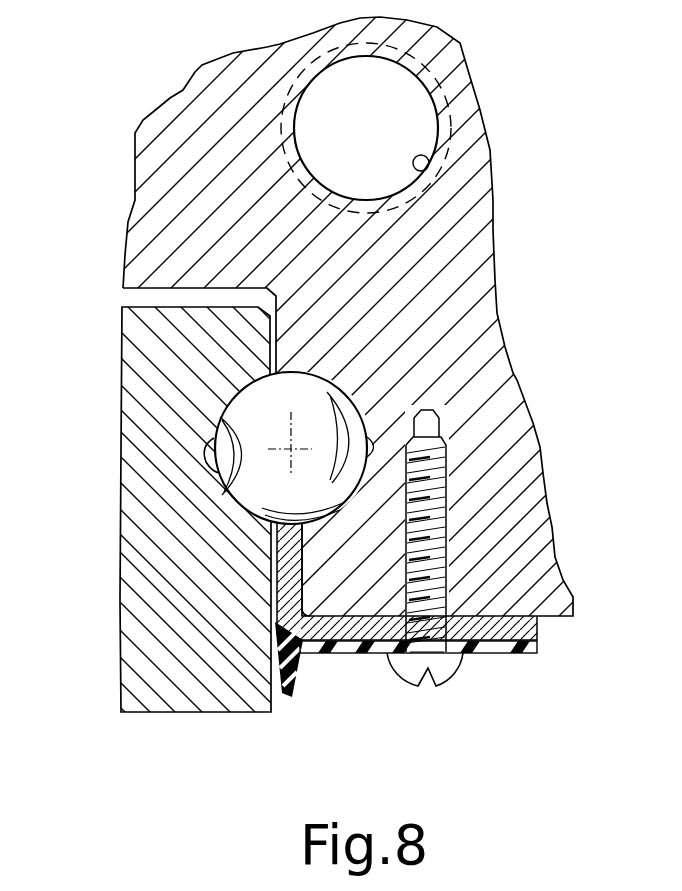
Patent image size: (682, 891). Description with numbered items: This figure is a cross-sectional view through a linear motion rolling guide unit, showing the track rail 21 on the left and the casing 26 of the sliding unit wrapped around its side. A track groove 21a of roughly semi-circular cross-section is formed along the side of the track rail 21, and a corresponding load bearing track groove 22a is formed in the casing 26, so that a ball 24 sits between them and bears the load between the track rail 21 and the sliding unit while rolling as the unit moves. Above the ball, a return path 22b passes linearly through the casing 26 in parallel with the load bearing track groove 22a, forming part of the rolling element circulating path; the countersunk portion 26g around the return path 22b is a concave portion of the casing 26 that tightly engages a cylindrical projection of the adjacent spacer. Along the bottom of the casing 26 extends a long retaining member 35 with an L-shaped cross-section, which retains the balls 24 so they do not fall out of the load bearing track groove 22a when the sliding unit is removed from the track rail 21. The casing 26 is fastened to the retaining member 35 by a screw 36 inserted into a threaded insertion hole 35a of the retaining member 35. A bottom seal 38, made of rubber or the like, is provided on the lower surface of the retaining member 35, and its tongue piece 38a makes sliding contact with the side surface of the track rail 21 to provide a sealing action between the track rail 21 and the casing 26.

The track rail 21 is at (137, 355).
The track groove 21a is at (230, 480).
The load bearing track groove 22a is at (350, 404).
The return path 22b is at (428, 170).
The ball 24 is at (262, 388).
The casing 26 is at (482, 282).
The countersunk portion 26g is at (443, 122).
The retaining member 35 is at (537, 627).
The threaded insertion hole 35a is at (438, 645).
The screw 36 is at (463, 668).
The bottom seal 38 is at (350, 655).
The tongue piece 38a is at (288, 697).